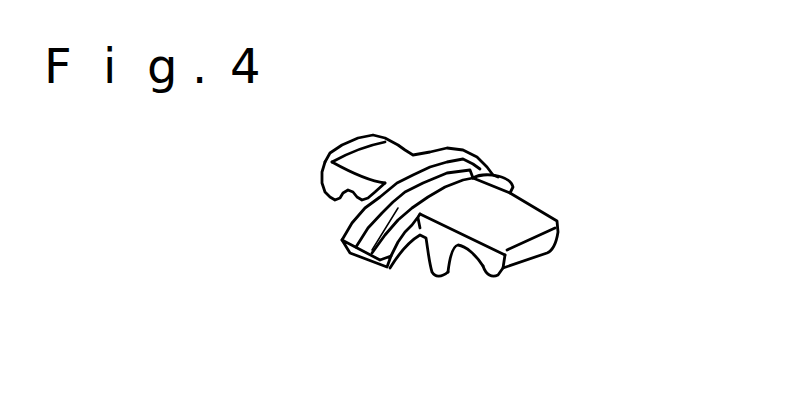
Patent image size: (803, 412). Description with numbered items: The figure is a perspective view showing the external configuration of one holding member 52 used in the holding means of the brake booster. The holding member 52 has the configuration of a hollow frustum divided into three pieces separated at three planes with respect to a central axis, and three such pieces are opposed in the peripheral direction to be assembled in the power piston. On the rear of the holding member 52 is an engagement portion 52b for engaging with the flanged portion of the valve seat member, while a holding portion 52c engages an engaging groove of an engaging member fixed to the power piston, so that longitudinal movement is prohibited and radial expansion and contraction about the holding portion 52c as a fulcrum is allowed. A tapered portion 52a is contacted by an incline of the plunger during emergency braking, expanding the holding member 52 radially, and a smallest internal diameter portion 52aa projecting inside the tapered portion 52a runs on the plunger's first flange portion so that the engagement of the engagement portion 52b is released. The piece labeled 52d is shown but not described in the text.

The holding member 52 is at (568, 155).
The tapered portion 52a is at (452, 280).
The smallest internal diameter portion 52aa is at (422, 273).
The engagement portion 52b is at (493, 280).
The holding portion 52c is at (341, 216).
The rib 52d is at (474, 162).